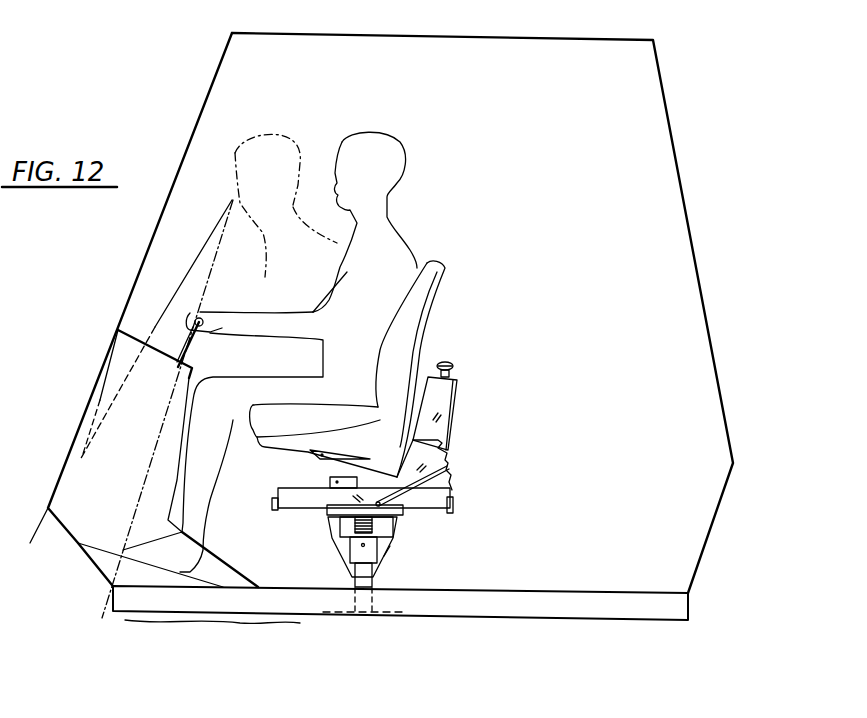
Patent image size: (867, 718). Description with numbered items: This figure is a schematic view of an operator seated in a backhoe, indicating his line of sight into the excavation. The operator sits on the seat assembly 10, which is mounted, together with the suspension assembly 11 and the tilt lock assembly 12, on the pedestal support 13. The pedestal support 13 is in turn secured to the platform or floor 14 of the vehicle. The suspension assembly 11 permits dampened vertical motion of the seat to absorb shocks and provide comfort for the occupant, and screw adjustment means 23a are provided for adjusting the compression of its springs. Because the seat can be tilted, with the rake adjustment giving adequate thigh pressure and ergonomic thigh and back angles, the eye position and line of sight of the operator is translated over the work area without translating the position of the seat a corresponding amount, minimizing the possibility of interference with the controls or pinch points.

The seat assembly 10 is at (447, 312).
The screw adjustment means 23a is at (448, 360).
The suspension assembly 11 is at (465, 385).
The tilt lock assembly 12 is at (465, 460).
The pedestal support 13 is at (408, 530).
The floor 14 is at (425, 614).